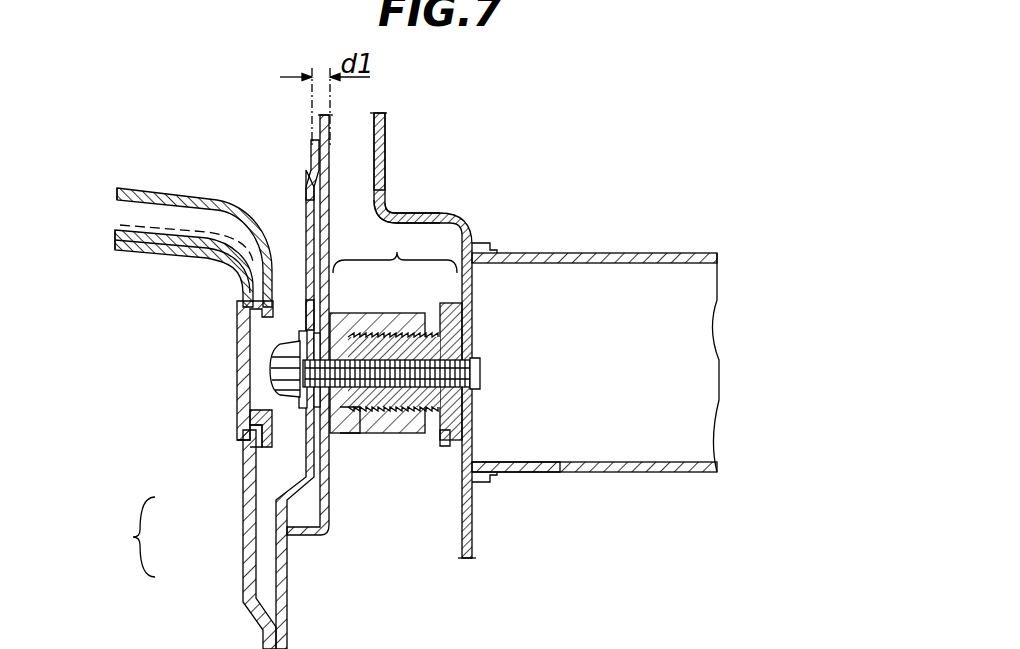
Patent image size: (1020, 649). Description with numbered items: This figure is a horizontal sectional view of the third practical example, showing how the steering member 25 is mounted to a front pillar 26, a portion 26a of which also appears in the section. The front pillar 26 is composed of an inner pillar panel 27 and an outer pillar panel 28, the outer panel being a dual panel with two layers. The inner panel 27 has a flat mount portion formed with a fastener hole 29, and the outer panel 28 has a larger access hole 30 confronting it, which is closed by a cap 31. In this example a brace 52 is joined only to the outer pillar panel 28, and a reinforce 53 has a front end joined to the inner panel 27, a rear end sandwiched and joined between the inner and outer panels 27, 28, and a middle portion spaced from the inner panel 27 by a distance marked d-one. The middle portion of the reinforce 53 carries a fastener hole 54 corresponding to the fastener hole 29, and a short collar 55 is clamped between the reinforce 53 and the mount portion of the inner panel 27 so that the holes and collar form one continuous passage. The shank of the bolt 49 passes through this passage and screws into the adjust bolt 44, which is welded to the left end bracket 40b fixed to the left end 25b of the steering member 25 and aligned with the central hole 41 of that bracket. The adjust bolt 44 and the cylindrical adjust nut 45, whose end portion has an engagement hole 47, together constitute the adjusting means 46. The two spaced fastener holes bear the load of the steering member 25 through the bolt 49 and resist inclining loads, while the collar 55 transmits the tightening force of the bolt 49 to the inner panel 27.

The steering member 25 is at (718, 367).
The left end of the steering member 25b is at (523, 475).
The front pillar 26 is at (120, 537).
The panel bent portion 26a is at (385, 208).
The inner pillar panel 27 is at (313, 515).
The outer pillar panel 28 is at (243, 503).
The fastener hole 29 is at (290, 388).
The access hole 30 is at (240, 420).
The cap 31 is at (236, 388).
The left end bracket 40b is at (386, 150).
The central hole 41 is at (461, 335).
The adjust bolt 44 is at (446, 304).
The adjust nut 45 is at (387, 320).
The adjusting means 46 is at (395, 248).
The engagement hole 47 is at (355, 412).
The bolt 49 is at (262, 362).
The brace 52 is at (144, 188).
The reinforce 53 is at (300, 205).
The fastener hole 54 is at (300, 350).
The collar 55 is at (307, 310).